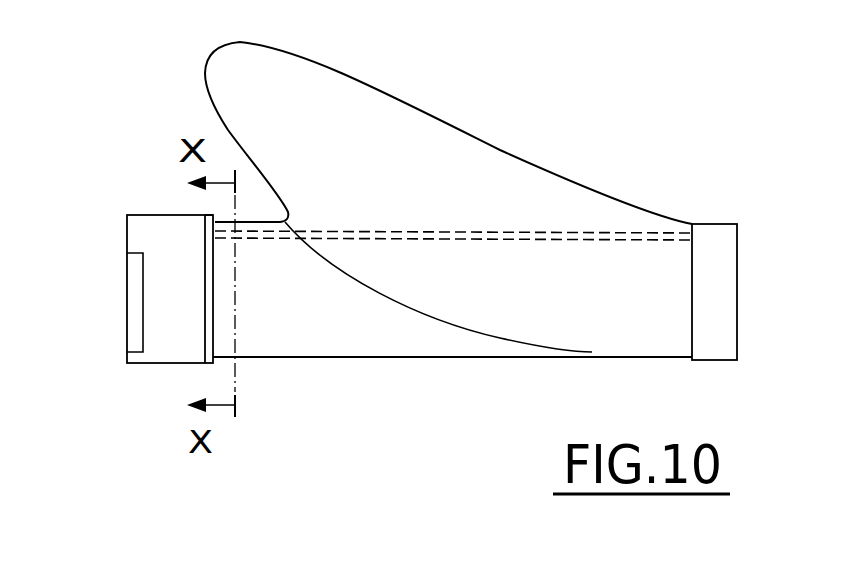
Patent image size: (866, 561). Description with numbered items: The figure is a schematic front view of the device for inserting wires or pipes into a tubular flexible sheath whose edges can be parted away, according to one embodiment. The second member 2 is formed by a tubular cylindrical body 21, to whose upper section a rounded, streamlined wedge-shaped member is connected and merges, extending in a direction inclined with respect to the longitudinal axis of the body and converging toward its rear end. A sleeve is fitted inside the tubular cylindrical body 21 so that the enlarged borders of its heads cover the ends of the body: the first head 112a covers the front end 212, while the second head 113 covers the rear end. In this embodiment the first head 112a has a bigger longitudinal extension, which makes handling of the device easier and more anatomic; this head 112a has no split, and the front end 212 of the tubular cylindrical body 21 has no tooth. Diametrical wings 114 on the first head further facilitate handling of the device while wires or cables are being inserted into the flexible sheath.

The second member 2 is at (564, 114).
The tubular cylindrical body 21 is at (432, 345).
The front end 212 is at (205, 213).
The first head 112a is at (175, 365).
The diametrical wings 114 is at (133, 283).
The second head 113 is at (722, 288).